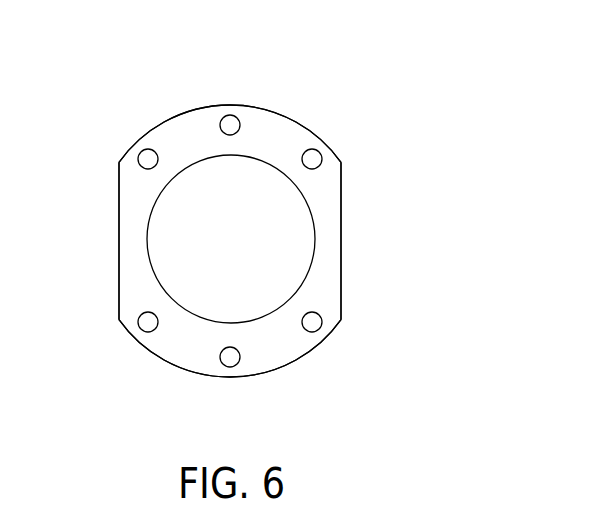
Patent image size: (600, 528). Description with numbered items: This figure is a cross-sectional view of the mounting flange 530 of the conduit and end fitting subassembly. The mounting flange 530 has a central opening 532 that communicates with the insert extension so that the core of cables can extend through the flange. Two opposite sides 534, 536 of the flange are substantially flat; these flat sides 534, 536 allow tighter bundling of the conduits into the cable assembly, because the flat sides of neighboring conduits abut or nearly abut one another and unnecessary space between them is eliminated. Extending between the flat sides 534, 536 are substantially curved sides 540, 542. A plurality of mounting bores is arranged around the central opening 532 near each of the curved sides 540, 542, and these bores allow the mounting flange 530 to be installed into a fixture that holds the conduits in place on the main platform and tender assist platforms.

The mounting flange 530 is at (406, 98).
The central opening 532 is at (244, 248).
The first substantially flat side 534 is at (119, 188).
The second substantially flat side 536 is at (341, 303).
The first substantially curved side 540 is at (259, 107).
The second substantially curved side 542 is at (184, 372).